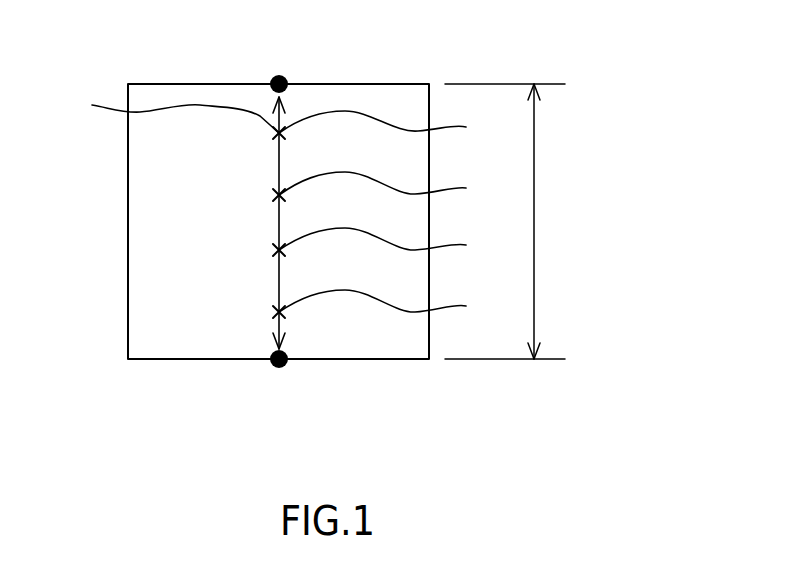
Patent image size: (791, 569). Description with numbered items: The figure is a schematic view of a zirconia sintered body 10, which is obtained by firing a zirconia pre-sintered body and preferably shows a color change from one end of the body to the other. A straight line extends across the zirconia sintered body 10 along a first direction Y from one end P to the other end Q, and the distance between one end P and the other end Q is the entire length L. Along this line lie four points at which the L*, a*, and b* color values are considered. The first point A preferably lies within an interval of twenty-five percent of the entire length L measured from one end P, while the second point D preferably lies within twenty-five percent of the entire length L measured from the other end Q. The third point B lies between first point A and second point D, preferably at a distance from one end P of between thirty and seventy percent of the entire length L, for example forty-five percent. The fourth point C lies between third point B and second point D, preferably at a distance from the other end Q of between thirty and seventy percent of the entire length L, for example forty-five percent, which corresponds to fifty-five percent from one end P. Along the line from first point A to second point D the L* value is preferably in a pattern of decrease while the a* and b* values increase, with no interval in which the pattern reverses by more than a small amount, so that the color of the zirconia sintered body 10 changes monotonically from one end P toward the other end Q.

The zirconia sintered body 10 is at (444, 70).
The one end P is at (279, 76).
The other end Q is at (279, 368).
The first direction Y is at (169, 105).
The first point A is at (381, 118).
The third point B is at (382, 180).
The fourth point C is at (382, 240).
The second point D is at (384, 303).
The entire length L is at (508, 221).